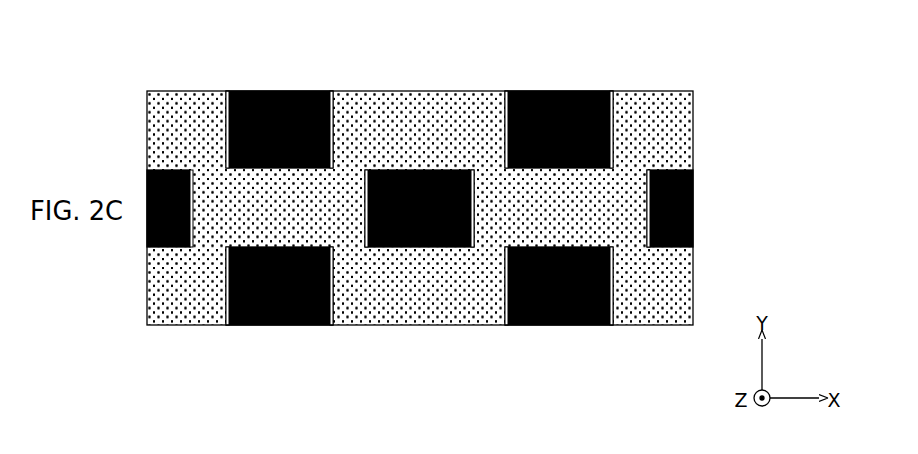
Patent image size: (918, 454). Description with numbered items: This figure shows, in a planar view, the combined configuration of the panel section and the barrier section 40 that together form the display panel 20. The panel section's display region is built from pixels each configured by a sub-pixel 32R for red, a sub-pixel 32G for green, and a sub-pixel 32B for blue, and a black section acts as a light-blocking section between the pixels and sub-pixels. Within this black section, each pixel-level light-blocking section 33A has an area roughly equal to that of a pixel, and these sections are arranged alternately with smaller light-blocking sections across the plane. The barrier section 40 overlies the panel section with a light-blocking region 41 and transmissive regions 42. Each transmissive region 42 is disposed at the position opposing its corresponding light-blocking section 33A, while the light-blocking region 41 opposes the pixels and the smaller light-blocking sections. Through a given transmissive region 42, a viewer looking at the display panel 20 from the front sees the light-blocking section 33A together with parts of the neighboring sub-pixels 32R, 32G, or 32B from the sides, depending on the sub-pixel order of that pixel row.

The display panel 20 is at (456, 211).
The sub-pixel for red 32R is at (336, 96).
The sub-pixel for green 32G is at (367, 183).
The sub-pixel for blue 32B is at (193, 182).
The light-blocking section 33A is at (285, 91).
The barrier section 40 is at (690, 115).
The light-blocking region 41 is at (672, 148).
The transmissive region 42 is at (219, 268).